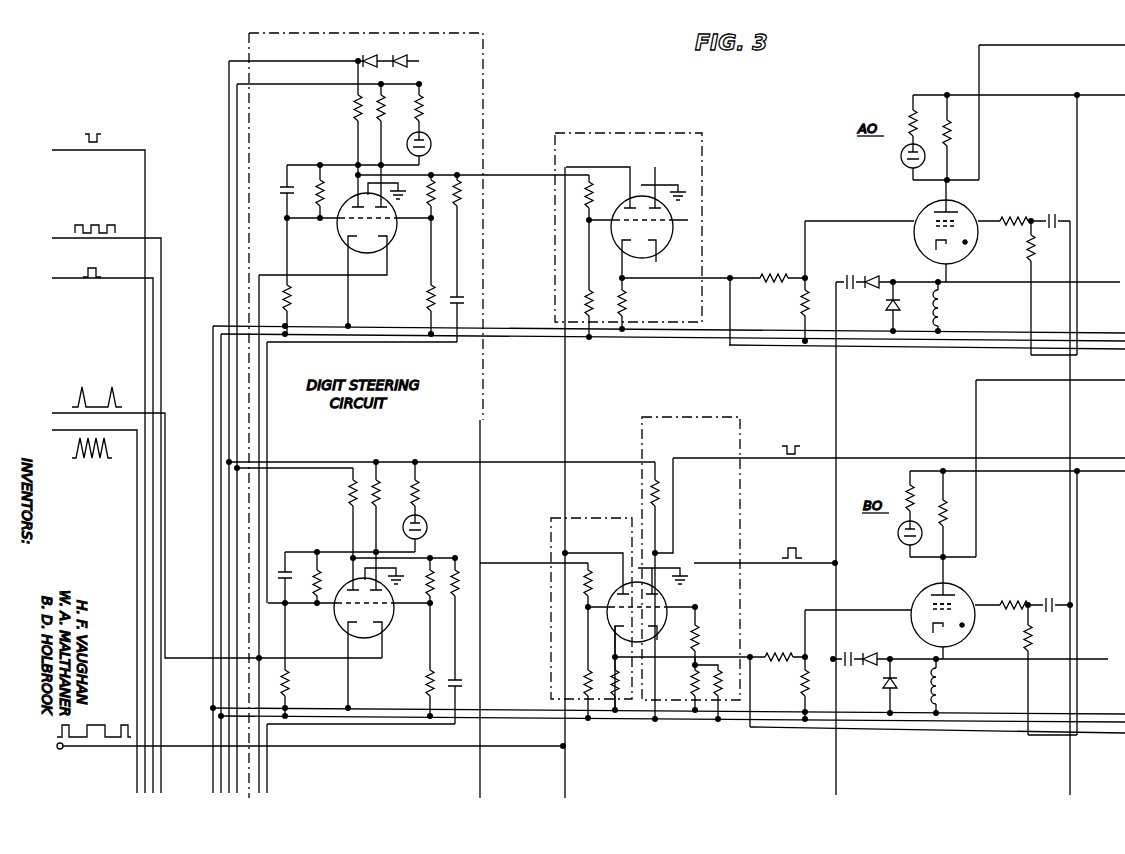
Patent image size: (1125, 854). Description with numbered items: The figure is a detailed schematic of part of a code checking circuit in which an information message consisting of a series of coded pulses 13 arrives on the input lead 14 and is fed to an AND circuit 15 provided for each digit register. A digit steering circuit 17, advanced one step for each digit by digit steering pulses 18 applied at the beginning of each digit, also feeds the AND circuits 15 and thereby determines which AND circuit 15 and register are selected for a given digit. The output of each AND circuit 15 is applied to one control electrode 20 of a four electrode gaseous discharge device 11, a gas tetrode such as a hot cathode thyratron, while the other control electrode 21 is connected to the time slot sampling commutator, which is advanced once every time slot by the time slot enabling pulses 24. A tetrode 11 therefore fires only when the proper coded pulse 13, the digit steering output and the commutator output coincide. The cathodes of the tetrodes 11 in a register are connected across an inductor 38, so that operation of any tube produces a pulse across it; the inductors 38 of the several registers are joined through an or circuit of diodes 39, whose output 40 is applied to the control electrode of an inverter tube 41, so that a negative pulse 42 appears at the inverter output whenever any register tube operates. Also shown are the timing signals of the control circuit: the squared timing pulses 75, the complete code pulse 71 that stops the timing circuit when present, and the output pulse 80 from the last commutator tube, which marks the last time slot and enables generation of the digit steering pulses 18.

The complete code pulse 71 is at (96, 133).
The squared timing pulses 75 is at (92, 221).
The output pulse 80 is at (97, 268).
The digit steering pulses 18 is at (109, 392).
The time slot enabling pulses 24 is at (92, 460).
The coded pulses 13 is at (95, 722).
The input lead 14 is at (355, 748).
The digit steering circuit 17 is at (494, 80).
The AND circuit 15 is at (721, 150).
The four electrode gaseous discharge device 11 is at (967, 204).
The control electrode 21 is at (930, 217).
The control electrode 20 is at (960, 228).
The diode 39 is at (875, 270).
The inductor 38 is at (947, 311).
The inverter tube 41 is at (667, 615).
The negative pulse 42 is at (792, 440).
The output of the or circuit 40 is at (793, 547).